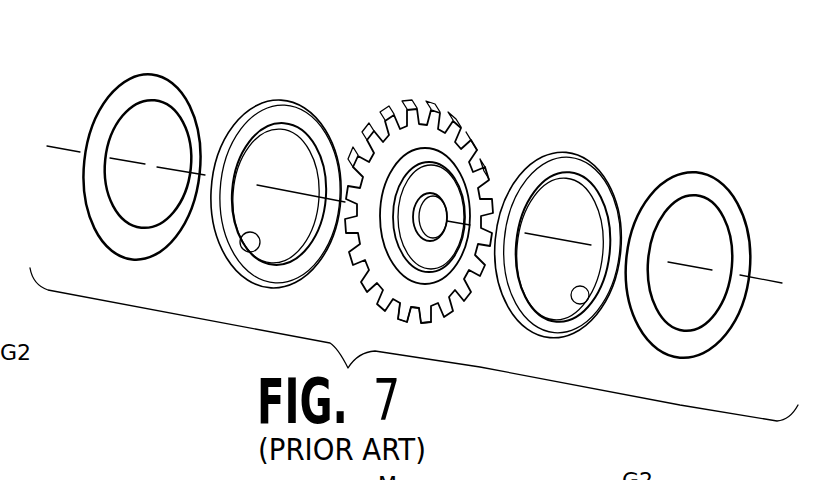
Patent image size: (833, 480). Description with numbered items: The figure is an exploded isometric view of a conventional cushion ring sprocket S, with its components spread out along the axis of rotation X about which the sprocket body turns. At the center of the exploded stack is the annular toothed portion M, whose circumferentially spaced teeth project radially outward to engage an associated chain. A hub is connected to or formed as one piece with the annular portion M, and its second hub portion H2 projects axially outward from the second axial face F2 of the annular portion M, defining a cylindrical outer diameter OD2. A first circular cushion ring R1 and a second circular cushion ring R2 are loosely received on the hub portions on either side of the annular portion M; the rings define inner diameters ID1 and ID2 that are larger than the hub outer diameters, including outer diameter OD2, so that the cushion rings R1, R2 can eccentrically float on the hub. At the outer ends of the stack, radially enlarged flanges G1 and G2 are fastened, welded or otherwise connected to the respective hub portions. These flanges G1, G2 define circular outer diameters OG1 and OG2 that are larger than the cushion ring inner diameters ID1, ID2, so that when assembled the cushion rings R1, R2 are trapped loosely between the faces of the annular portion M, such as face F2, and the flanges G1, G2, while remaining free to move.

The circular outer diameter of first flange OG1 is at (106, 102).
The first radially enlarged flange G1 is at (125, 153).
The first circular cushion ring R1 is at (257, 175).
The inner diameter of first cushion ring ID1 is at (243, 254).
The cylindrical outer diameter of second hub portion OD2 is at (397, 130).
The annular toothed portion M is at (432, 196).
The second hub portion H2 is at (458, 130).
The second axial face F2 is at (455, 302).
The second circular cushion ring R2 is at (563, 248).
The inner diameter of second cushion ring ID2 is at (580, 303).
The second radially enlarged flange G2 is at (700, 277).
The circular outer diameter of second flange OG2 is at (698, 357).
The axis of rotation X is at (762, 282).
The cushion ring sprocket S is at (203, 336).